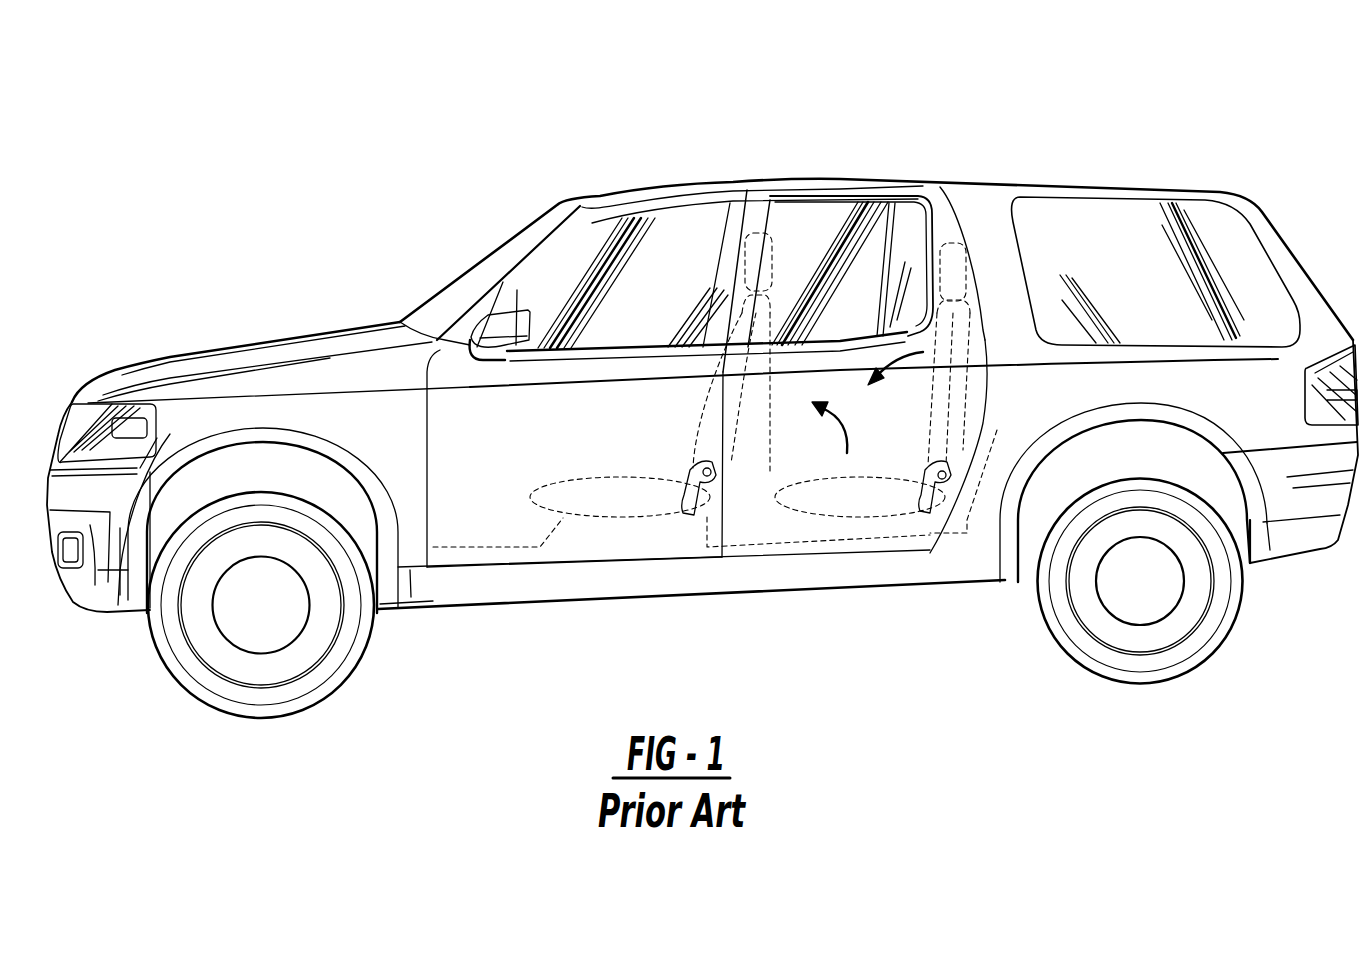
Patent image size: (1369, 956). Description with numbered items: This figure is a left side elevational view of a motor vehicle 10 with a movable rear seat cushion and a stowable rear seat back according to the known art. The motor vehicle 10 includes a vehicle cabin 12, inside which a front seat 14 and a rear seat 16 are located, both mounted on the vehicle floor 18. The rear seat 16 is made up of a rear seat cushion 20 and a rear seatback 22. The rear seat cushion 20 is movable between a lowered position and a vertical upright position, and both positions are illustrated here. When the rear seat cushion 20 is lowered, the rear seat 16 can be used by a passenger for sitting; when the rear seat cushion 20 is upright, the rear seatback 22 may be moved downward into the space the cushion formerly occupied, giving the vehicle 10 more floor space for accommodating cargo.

The motor vehicle 10 is at (382, 184).
The vehicle cabin 12 is at (467, 527).
The front seat 14 is at (630, 500).
The rear seat 16 is at (873, 500).
The vehicle floor 18 is at (693, 530).
The rear seat cushion 20 is at (790, 448).
The rear seatback 22 is at (947, 407).